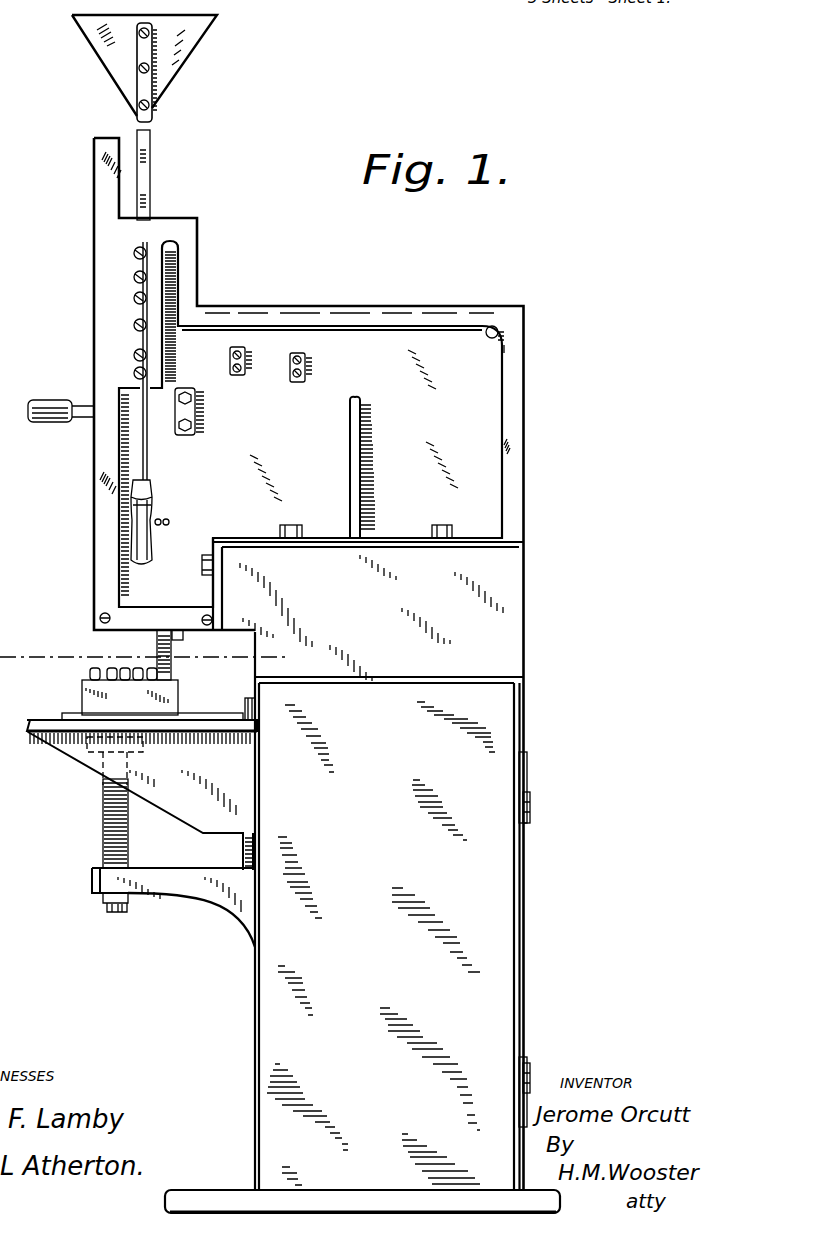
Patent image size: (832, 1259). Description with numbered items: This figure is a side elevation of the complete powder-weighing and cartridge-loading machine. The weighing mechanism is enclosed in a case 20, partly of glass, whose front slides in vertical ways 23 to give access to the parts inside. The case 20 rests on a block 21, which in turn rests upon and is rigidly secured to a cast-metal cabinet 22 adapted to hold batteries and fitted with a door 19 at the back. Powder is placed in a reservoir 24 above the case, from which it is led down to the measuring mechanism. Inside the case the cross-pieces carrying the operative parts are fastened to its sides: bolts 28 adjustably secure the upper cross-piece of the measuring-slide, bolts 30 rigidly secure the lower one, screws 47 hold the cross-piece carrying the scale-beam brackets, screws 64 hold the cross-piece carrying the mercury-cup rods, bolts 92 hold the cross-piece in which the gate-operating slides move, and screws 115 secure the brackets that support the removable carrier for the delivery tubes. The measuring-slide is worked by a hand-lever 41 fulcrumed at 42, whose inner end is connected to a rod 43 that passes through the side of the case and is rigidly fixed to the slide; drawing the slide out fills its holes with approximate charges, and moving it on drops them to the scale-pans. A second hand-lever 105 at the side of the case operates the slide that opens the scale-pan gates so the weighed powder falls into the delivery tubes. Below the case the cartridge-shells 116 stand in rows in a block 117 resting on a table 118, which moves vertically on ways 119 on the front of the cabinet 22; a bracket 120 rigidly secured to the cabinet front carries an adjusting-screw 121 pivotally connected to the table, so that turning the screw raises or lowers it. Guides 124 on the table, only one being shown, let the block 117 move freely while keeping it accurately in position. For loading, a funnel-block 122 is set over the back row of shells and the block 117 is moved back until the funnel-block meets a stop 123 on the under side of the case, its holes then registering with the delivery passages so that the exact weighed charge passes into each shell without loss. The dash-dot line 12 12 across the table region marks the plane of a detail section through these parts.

The section line 12 is at (280, 931).
The door 19 is at (525, 933).
The case 20 is at (314, 424).
The block 21 is at (368, 609).
The cabinet 22 is at (384, 911).
The vertical ways 23 is at (101, 153).
The reservoir 24 is at (170, 78).
The bolts 28 is at (150, 300).
The bolts 30 is at (134, 373).
The hand-lever 41 is at (147, 478).
The fulcrum 42 is at (139, 250).
The rod 43 is at (134, 325).
The screws 47 is at (245, 360).
The screws 64 is at (306, 368).
The bolts 92 is at (197, 412).
The hand-lever 105 is at (50, 404).
The screws 115 is at (170, 521).
The cartridge-shells 116 is at (102, 663).
The block 117 is at (152, 700).
The table 118 is at (187, 730).
The ways 119 is at (256, 708).
The bracket 120 is at (202, 893).
The adjusting-screw 121 is at (103, 826).
The funnel-block 122 is at (172, 665).
The stop 123 is at (183, 638).
The guides 124 is at (62, 718).